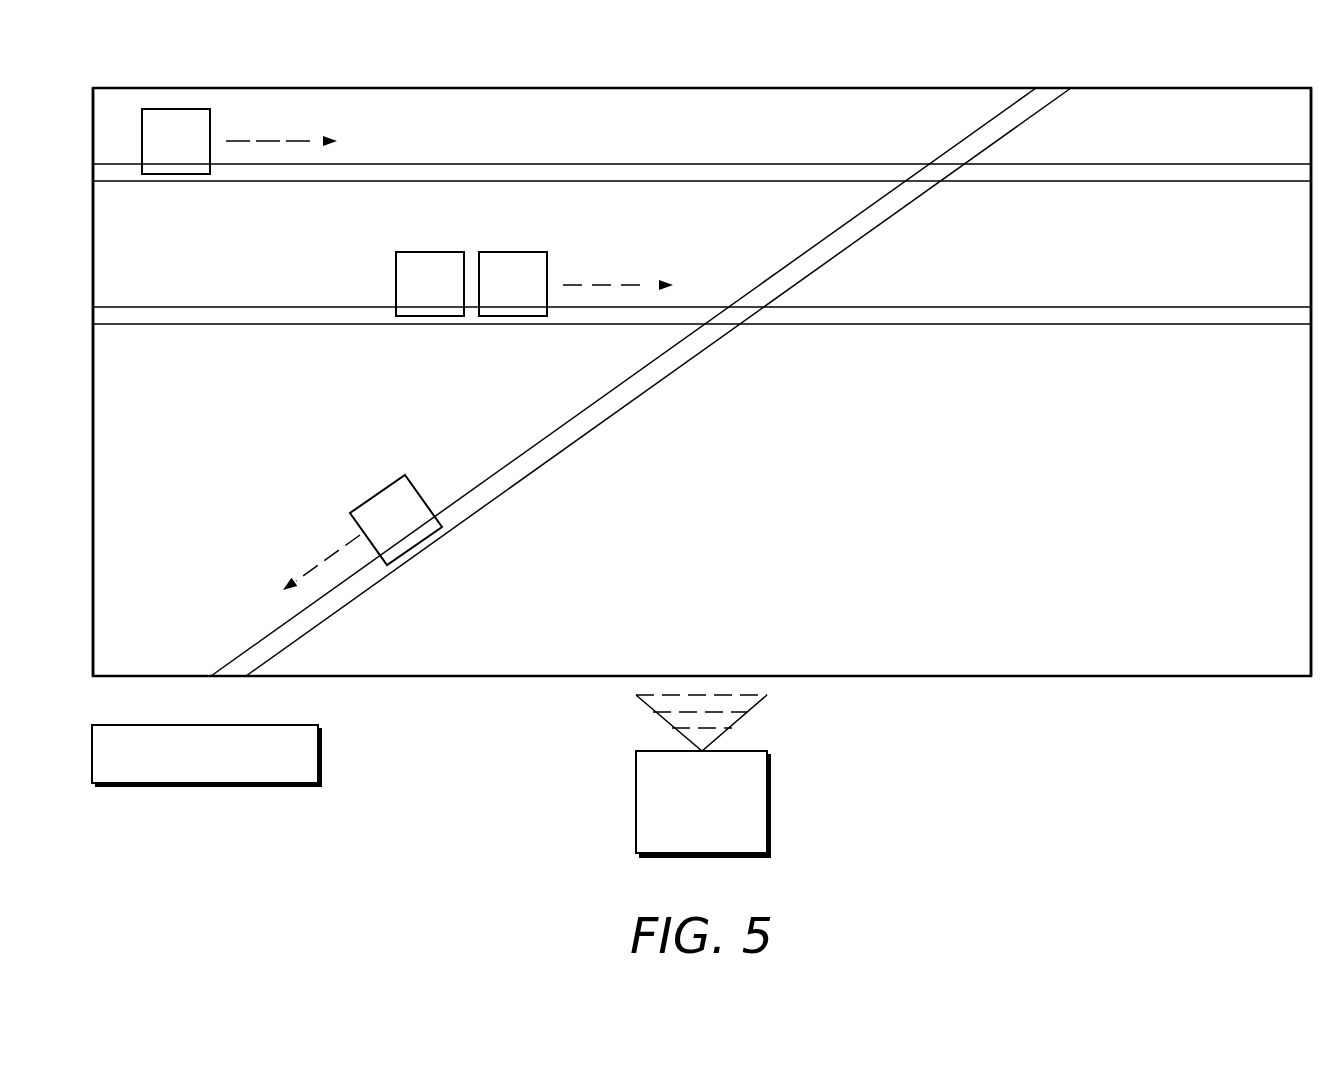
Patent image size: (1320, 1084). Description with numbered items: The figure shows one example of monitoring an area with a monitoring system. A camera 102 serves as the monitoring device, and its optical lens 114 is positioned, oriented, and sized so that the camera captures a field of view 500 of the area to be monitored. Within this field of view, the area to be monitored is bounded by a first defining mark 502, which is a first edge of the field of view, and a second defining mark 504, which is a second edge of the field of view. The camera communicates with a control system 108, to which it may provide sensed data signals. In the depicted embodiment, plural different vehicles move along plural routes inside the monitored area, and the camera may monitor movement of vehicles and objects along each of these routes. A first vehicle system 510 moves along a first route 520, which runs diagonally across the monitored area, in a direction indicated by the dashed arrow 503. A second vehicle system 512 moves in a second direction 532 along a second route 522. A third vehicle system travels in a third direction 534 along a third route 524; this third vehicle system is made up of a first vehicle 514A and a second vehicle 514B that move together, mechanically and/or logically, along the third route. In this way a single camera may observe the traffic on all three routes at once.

The field of view 500 is at (1215, 77).
The first defining mark 502 is at (103, 502).
The direction of travel of vehicle 503 is at (333, 557).
The second defining mark 504 is at (1300, 487).
The first vehicle system 510 is at (382, 493).
The second vehicle system 512 is at (176, 188).
The first vehicle 514A is at (513, 252).
The second vehicle 514B is at (431, 252).
The first route 520 is at (503, 450).
The second route 522 is at (268, 187).
The third route 524 is at (981, 293).
The second direction 532 is at (305, 141).
The third direction 534 is at (618, 283).
The control system 108 is at (293, 725).
The optical lens 114 is at (633, 721).
The camera 102 is at (786, 805).